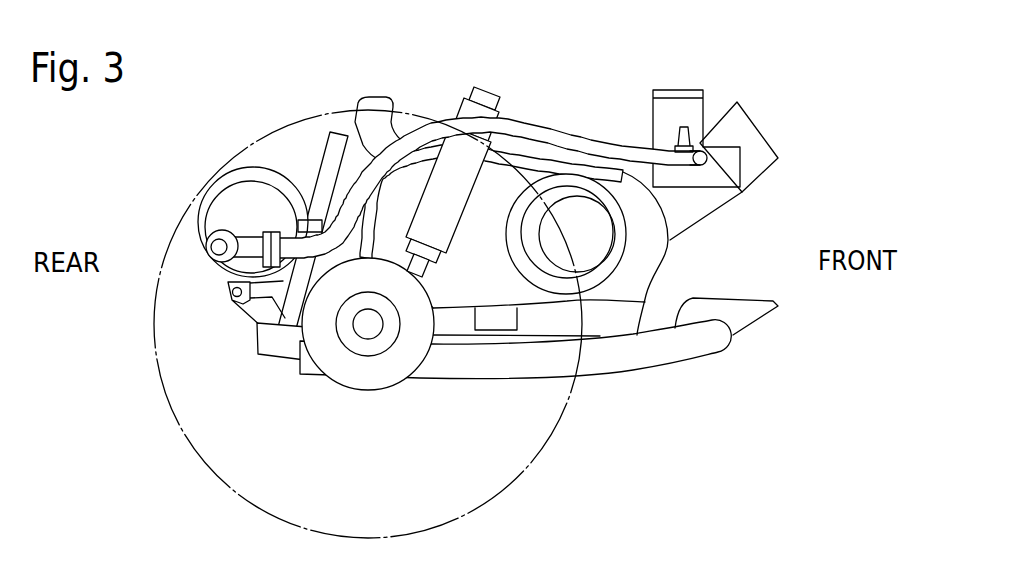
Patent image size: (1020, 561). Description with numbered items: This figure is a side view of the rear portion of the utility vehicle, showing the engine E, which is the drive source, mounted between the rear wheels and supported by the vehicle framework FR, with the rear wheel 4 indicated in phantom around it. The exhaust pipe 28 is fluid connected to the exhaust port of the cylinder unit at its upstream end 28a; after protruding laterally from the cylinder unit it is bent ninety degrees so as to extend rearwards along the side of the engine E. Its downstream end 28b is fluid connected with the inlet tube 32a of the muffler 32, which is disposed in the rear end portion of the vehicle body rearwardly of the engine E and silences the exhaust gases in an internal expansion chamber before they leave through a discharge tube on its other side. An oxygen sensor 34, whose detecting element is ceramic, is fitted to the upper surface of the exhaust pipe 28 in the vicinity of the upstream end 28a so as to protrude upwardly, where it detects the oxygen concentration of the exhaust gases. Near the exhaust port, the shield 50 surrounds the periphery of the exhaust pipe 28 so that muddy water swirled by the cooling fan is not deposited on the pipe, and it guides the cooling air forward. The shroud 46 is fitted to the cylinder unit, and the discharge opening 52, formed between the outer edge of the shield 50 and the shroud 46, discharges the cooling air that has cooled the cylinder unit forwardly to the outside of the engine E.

The rear wheel 4 is at (547, 441).
The exhaust pipe 28 is at (597, 150).
The upstream end of exhaust pipe 28a is at (706, 158).
The downstream end of exhaust pipe 28b is at (283, 230).
The muffler 32 is at (214, 183).
The inlet tube 32a is at (243, 250).
The oxygen sensor 34 is at (693, 138).
The shroud 46 is at (716, 200).
The shield 50 is at (722, 147).
The discharge opening 52 is at (704, 100).
The engine E is at (672, 242).
The vehicle framework FR is at (676, 366).